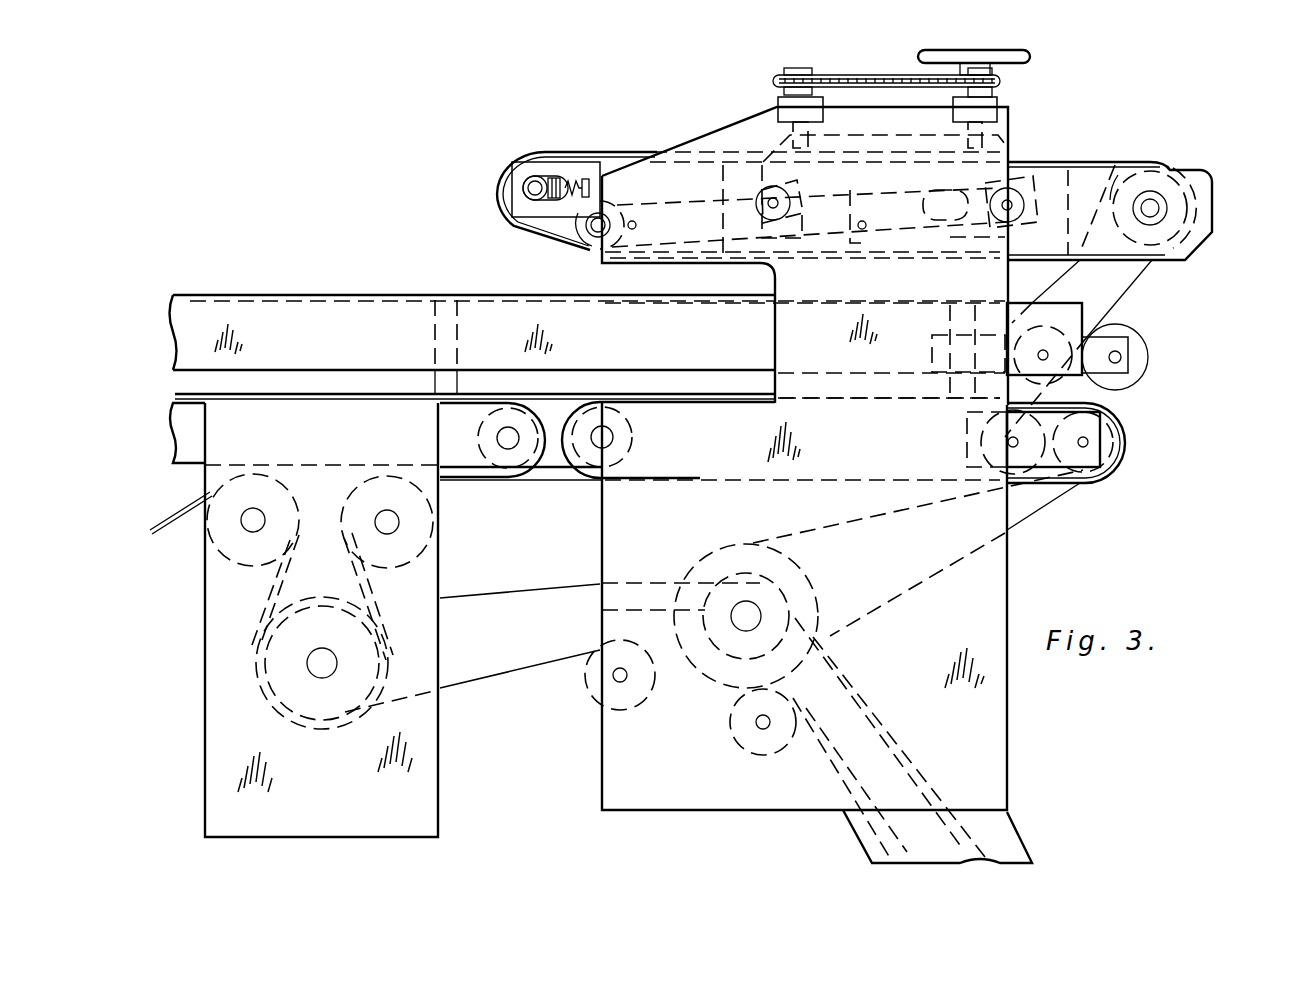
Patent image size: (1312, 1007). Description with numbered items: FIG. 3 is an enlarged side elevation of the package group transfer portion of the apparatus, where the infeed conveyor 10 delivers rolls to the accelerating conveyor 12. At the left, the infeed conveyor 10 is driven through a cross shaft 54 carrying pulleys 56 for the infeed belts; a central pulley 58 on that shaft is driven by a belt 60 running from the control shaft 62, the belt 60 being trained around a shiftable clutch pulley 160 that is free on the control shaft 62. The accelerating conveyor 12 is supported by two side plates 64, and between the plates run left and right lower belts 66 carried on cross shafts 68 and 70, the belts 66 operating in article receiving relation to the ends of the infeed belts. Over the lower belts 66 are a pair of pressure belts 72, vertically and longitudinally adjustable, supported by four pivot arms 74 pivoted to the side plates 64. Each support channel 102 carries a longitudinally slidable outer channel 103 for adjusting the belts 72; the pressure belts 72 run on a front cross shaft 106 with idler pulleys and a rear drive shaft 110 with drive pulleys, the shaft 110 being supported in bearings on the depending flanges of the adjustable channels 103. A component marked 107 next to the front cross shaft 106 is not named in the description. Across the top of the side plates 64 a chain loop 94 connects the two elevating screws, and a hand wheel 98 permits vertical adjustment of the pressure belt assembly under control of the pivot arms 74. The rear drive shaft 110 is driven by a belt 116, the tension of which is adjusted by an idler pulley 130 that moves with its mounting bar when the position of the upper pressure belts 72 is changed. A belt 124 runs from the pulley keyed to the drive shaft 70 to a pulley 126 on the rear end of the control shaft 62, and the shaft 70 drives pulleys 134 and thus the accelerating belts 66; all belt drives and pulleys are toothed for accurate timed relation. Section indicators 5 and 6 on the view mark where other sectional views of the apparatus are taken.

The section line 5- 5 is at (802, 62).
The section line 6- 6 is at (745, 428).
The infeed conveyor 10 is at (220, 287).
The accelerating conveyor 12 is at (628, 139).
The cross shaft 54 is at (337, 663).
The pulleys 56 is at (288, 605).
The central pulley 58 is at (257, 677).
The belt 60 is at (540, 664).
The control shaft 62 is at (745, 612).
The side plates 64 is at (720, 140).
The lower belts 66 is at (660, 396).
The cross shaft 68 is at (593, 441).
The drive shaft 70 is at (1087, 443).
The pressure belts 72 is at (566, 240).
The pivot arms 74 is at (671, 246).
The chain loop 94 is at (859, 76).
The hand wheel 98 is at (985, 56).
The support channel 102 is at (1115, 163).
The outer channel 103 is at (1200, 173).
The front cross shaft 106 is at (528, 187).
The spring latch 107 is at (553, 176).
The rear drive shaft 110 is at (1163, 208).
The belt 116 is at (1128, 292).
The belt 124 is at (1022, 522).
The pulley 126 is at (710, 683).
The idler pulley 130 is at (1137, 375).
The pulleys 134 is at (1123, 435).
The shiftable clutch pulley 160 is at (602, 612).